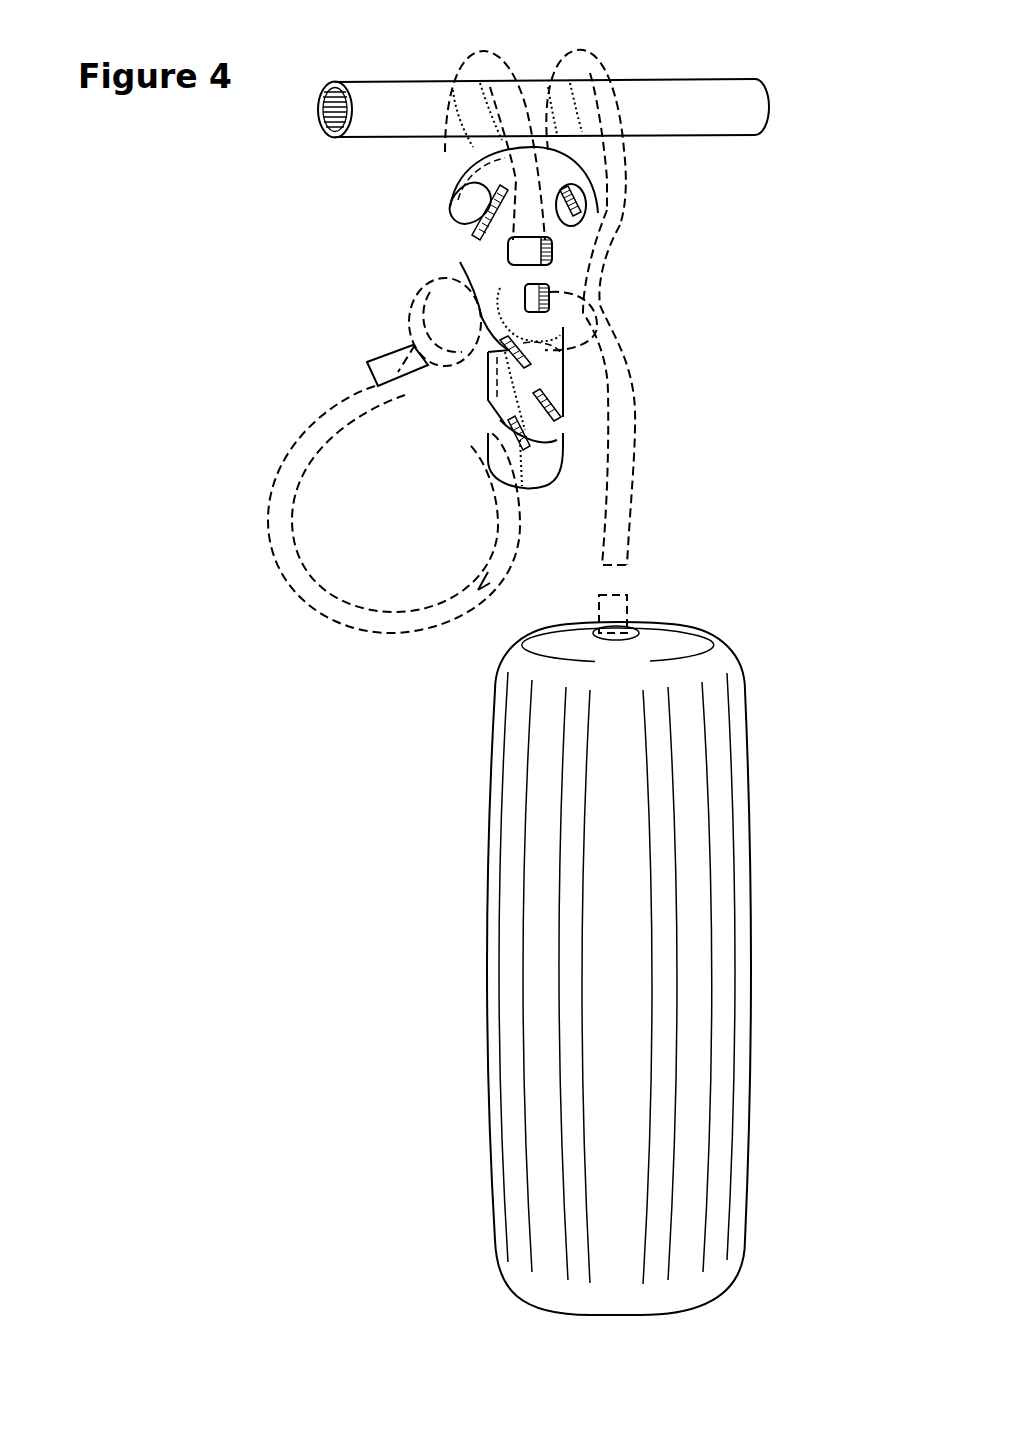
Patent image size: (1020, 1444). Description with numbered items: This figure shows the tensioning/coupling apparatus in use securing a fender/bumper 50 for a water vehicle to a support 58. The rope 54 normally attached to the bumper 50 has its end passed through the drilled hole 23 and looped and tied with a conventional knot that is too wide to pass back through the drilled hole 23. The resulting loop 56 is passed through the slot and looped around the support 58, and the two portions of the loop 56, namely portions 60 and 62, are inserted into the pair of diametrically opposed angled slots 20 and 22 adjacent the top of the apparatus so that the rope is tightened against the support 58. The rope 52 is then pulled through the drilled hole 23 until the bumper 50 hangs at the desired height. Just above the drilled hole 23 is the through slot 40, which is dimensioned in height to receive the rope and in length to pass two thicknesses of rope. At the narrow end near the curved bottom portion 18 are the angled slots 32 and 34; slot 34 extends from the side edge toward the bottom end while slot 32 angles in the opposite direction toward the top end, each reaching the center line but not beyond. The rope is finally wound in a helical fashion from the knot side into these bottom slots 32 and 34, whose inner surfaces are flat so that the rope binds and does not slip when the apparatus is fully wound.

The curved bottom portion 18 is at (525, 487).
The slot 20 is at (497, 207).
The slot 22 is at (560, 237).
The drilled hole 23 is at (547, 298).
The angular disposed slot 32 is at (557, 418).
The angular disposed slot 34 is at (492, 430).
The through slot 40 is at (512, 252).
The fender/bumper 50 is at (619, 968).
The rope 52 is at (620, 505).
The rope 54 is at (365, 370).
The loop 56 is at (548, 243).
The support 58 is at (735, 95).
The portion of loop 60 is at (477, 145).
The portion of loop 62 is at (580, 147).